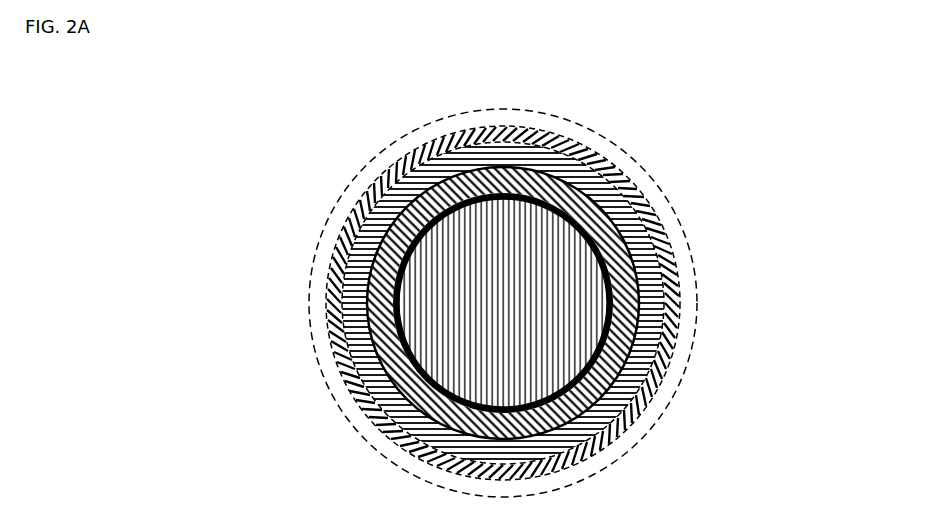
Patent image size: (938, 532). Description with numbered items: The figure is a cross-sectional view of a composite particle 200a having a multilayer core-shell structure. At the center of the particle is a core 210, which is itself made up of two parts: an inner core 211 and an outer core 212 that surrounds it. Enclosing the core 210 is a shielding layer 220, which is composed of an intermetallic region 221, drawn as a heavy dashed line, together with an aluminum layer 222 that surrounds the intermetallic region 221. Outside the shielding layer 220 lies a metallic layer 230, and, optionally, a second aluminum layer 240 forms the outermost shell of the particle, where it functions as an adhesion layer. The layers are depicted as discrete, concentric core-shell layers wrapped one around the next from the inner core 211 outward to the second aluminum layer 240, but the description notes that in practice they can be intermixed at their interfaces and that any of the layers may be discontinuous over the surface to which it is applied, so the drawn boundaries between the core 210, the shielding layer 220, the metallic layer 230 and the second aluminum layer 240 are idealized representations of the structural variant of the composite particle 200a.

The composite particle 200a is at (270, 145).
The core 210 is at (803, 328).
The inner core 211 is at (573, 372).
The outer core 212 is at (627, 402).
The shielding layer 220 is at (803, 193).
The intermetallic region 221 is at (643, 322).
The aluminum layer 222 is at (645, 248).
The metallic layer 230 is at (612, 167).
The second aluminum layer 240 is at (557, 112).